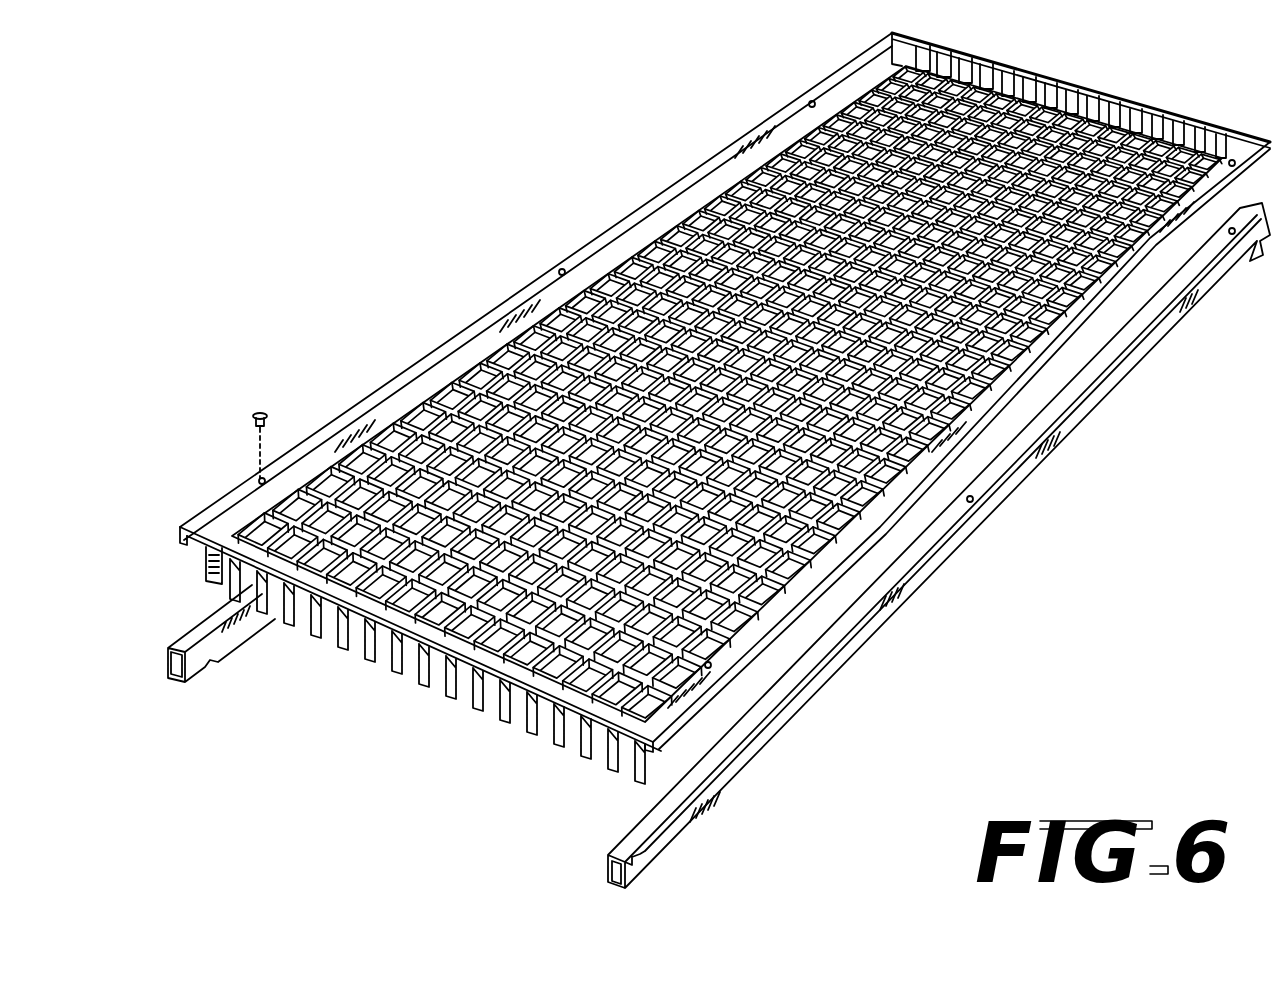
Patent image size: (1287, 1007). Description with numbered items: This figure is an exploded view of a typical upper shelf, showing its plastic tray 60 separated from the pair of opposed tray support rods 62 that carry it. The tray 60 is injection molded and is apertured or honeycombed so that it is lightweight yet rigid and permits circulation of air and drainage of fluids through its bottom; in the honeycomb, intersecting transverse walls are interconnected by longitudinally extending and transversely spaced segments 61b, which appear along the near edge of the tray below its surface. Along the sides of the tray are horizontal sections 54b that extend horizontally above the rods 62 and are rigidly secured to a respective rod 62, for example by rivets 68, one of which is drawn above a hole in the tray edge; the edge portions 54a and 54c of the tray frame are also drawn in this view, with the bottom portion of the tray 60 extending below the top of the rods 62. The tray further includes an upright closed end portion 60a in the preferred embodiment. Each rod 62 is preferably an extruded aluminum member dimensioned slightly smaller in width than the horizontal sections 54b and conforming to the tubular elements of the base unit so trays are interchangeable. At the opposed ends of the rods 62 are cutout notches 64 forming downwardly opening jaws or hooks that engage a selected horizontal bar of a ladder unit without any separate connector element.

The plastic tray 60 is at (722, 250).
The upright closed end portion 60a is at (388, 632).
The longitudinally extending and transversely spaced segments 61b is at (490, 700).
The left frame member 54a is at (508, 330).
The horizontal sections 54b is at (1052, 340).
The front frame member 54c is at (690, 718).
The tray support rods 62 is at (1010, 483).
The cutout notches 64 is at (207, 674).
The rivets 68 is at (261, 410).